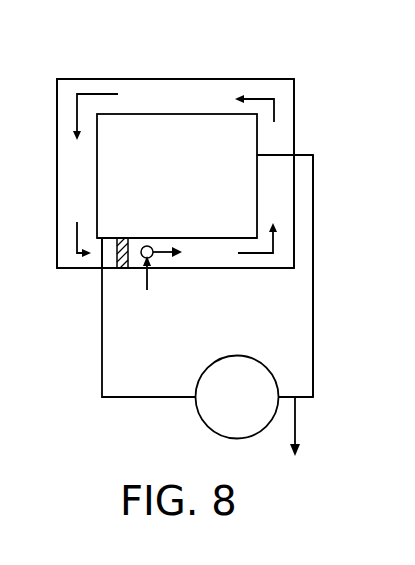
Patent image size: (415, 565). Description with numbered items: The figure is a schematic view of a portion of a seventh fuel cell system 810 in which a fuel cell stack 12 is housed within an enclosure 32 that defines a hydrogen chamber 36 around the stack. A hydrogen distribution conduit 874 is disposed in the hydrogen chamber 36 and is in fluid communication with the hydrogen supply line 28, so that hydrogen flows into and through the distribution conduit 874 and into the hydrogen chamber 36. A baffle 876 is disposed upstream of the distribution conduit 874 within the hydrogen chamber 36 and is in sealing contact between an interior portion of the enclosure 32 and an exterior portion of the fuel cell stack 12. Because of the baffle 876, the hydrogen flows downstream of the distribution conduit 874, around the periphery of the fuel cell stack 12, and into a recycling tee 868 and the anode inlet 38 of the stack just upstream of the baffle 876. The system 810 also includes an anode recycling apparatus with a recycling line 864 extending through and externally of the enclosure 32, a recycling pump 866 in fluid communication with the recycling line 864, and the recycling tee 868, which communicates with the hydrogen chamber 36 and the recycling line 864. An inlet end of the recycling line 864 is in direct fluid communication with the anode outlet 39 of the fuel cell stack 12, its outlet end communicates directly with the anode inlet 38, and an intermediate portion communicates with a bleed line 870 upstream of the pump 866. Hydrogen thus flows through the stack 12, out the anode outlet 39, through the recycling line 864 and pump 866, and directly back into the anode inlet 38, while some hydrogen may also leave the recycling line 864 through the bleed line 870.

The seventh fuel cell system 810 is at (116, 57).
The enclosure 32 is at (294, 79).
The fuel cell stack 12 is at (183, 178).
The hydrogen chamber 36 is at (282, 137).
The anode outlet 39 is at (257, 156).
The anode inlet 38 is at (97, 243).
The recycling tee 868 is at (98, 258).
The baffle 876 is at (123, 268).
The hydrogen distribution conduit 874 is at (150, 257).
The hydrogen supply line 28 is at (148, 343).
The recycling line 864 is at (313, 295).
The recycling pump 866 is at (203, 421).
The bleed line 870 is at (297, 428).